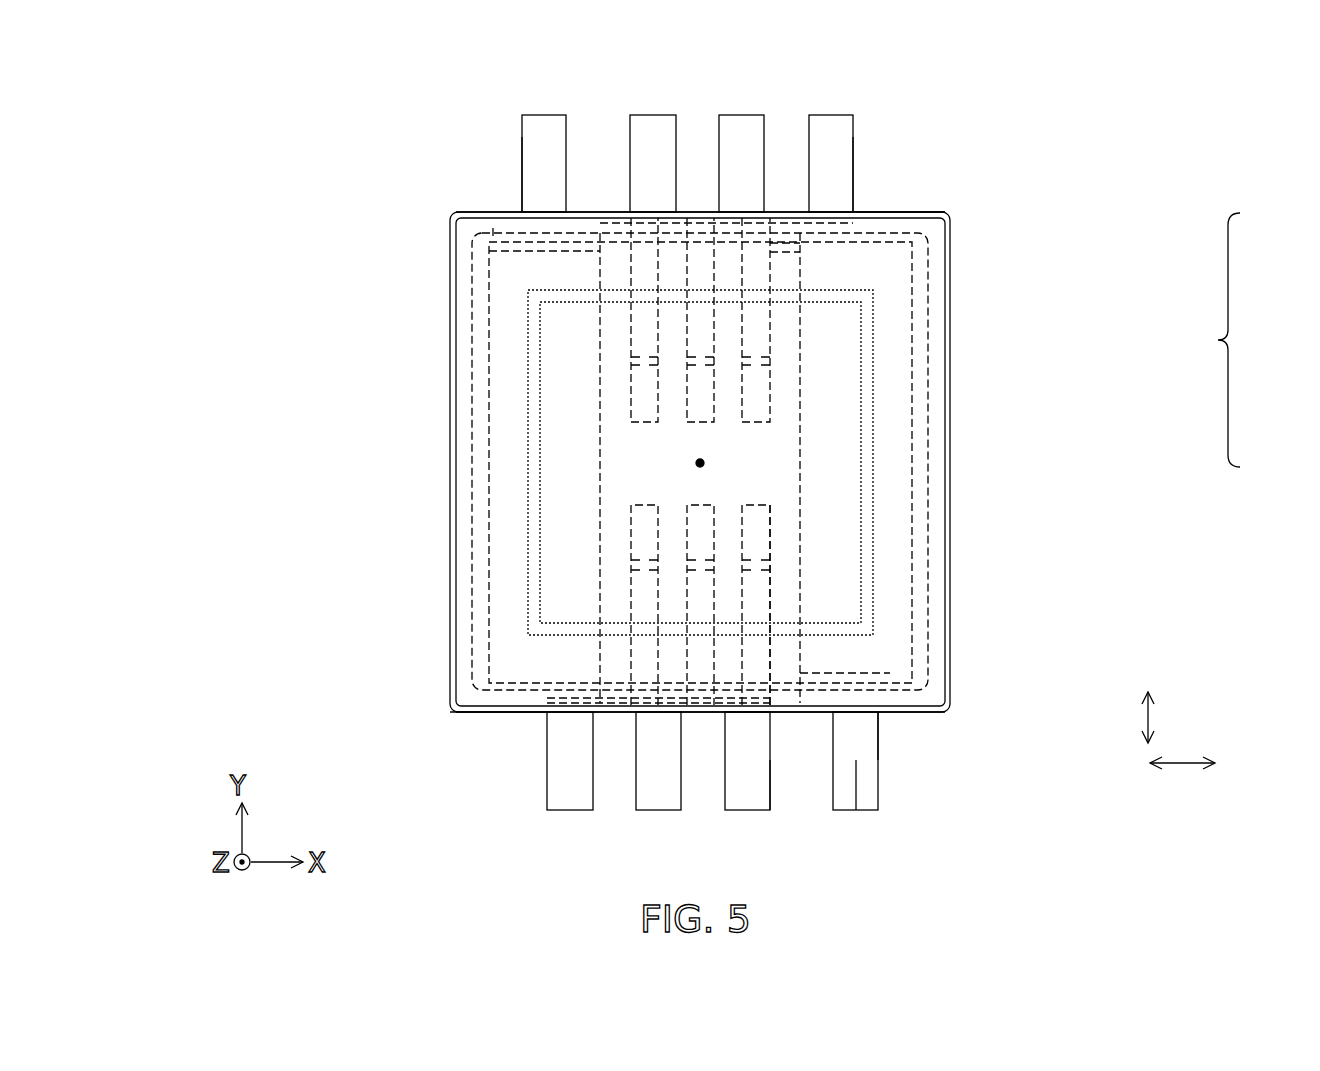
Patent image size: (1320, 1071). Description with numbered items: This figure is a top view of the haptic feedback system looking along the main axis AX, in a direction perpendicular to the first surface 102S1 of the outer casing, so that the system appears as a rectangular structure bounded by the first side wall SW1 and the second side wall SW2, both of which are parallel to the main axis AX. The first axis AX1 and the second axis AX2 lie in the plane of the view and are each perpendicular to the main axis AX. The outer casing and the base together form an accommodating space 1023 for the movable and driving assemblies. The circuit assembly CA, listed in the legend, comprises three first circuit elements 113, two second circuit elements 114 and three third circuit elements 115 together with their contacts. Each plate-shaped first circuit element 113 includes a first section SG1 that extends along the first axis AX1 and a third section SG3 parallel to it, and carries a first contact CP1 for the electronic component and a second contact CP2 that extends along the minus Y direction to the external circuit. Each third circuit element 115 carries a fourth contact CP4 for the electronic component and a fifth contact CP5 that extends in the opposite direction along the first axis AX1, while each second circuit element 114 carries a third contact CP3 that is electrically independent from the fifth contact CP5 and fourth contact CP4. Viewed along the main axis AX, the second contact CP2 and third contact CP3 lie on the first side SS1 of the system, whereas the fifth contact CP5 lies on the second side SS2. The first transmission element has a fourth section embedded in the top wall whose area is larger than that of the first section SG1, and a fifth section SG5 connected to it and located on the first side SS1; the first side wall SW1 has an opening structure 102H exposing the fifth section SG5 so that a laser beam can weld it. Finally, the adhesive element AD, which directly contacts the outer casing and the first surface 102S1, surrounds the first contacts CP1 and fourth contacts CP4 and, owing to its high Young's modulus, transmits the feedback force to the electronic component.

The first surface 102S1 is at (940, 338).
The second side wall SW2 is at (941, 214).
The first side wall SW1 is at (935, 714).
The second side SS2 is at (905, 210).
The first side SS1 is at (487, 720).
The accommodating space 1023 is at (478, 269).
The fifth section SG5 is at (898, 688).
The adhesive element AD is at (535, 345).
The fourth contact CP4 is at (757, 402).
The first contact CP1 is at (757, 540).
The first section SG1 is at (764, 605).
The main axis AX is at (723, 463).
The second circuit element 114 is at (543, 112).
The third circuit element 115 is at (652, 112).
The first circuit element 113 is at (570, 813).
The third contact CP3 is at (522, 136).
The fifth contact CP5 is at (840, 137).
The second contact CP2 is at (765, 790).
The third section SG3 is at (774, 752).
The opening structure 102H is at (512, 222).
The first axis AX1 is at (1144, 698).
The second axis AX2 is at (1211, 764).
The circuit assembly CA is at (1229, 340).